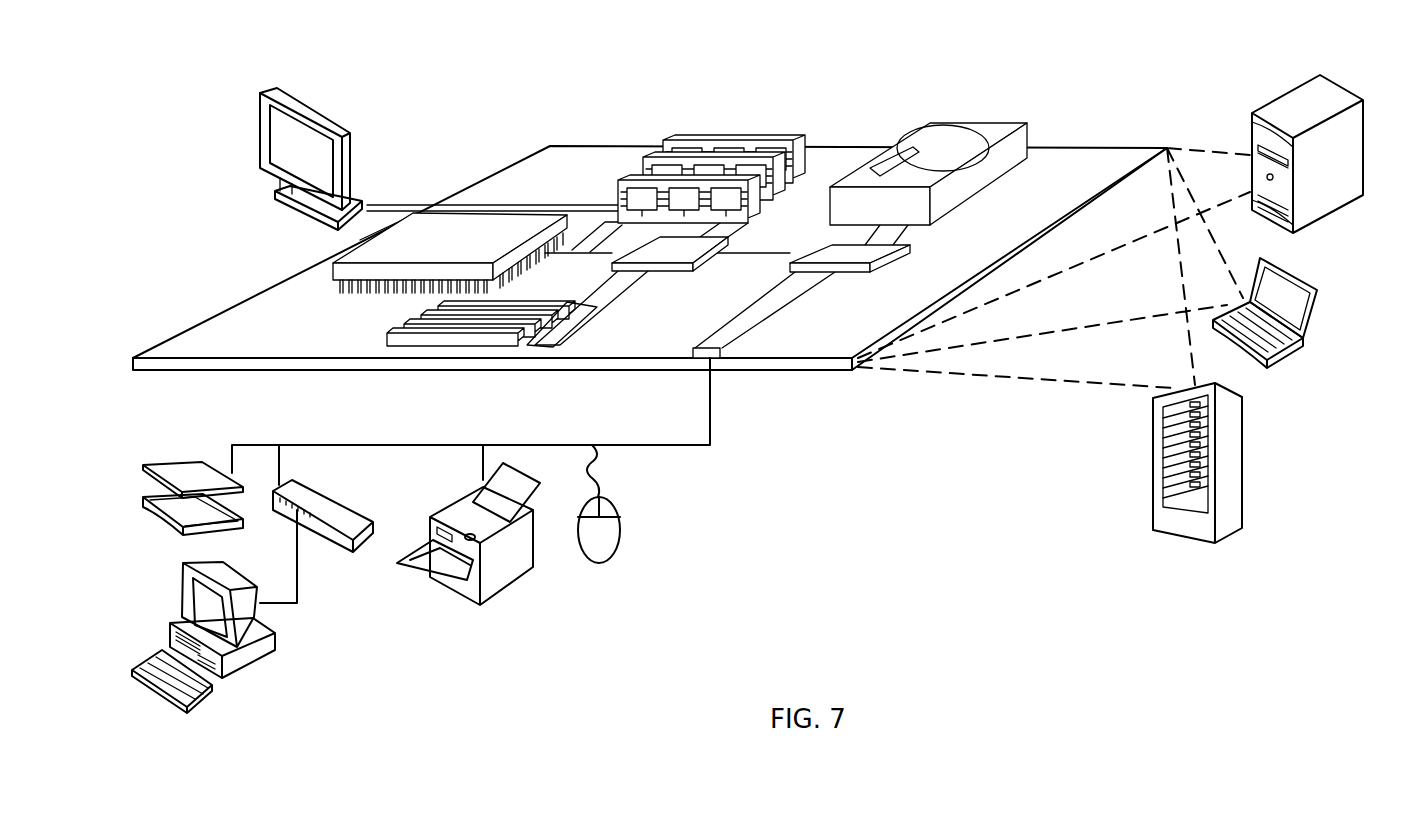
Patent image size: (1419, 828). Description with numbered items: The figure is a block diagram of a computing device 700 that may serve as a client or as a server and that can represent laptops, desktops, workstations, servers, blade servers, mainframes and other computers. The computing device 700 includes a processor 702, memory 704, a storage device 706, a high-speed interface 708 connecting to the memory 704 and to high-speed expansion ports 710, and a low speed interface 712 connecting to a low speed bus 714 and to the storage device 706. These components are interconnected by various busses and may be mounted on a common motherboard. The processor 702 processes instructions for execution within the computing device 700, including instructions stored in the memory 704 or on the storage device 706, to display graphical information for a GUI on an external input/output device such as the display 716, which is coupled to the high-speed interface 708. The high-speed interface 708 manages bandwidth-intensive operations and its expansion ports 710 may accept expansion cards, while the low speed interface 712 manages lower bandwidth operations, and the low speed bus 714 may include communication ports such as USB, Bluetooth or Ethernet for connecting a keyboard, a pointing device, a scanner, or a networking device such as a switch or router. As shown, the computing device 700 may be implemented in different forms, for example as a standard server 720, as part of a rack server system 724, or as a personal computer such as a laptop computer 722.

The computing device 700 is at (462, 114).
The processor 702 is at (300, 270).
The memory 704 is at (668, 142).
The storage device 706 is at (925, 125).
The high-speed interface 708 is at (647, 255).
The high-speed expansion ports 710 is at (407, 329).
The low speed interface 712 is at (827, 258).
The low speed bus 714 is at (717, 358).
The display 716 is at (264, 92).
The standard server 720 is at (1252, 132).
The laptop computer 722 is at (1327, 287).
The rack server system 724 is at (1153, 492).